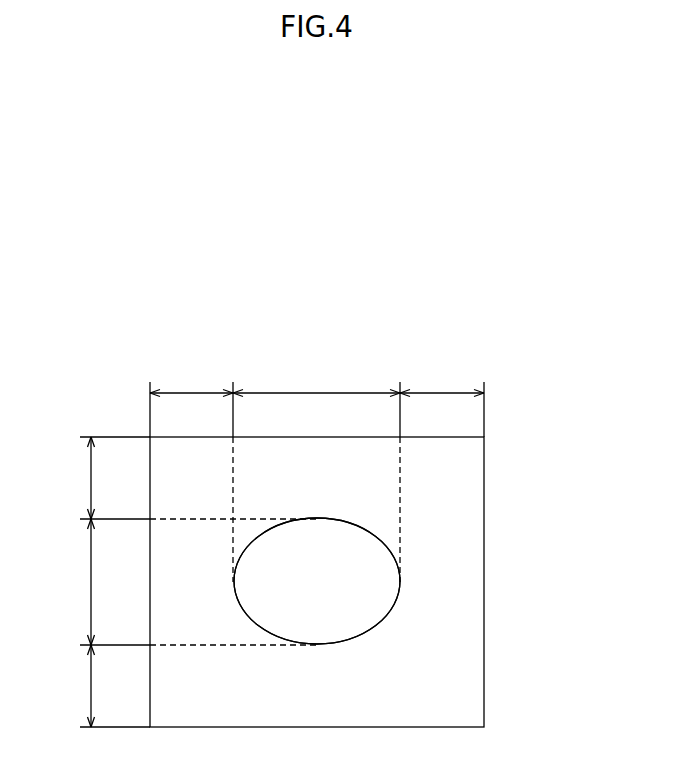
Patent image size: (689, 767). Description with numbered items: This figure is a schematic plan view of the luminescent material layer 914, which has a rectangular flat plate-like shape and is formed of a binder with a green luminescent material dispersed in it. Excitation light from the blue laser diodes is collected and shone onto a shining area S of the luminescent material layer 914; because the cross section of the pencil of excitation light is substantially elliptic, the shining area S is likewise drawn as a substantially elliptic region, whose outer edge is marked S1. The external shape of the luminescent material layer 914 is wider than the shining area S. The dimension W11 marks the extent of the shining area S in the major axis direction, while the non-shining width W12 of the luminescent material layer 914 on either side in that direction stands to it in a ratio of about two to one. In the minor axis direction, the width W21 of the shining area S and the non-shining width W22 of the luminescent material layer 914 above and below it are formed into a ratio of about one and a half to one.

The luminescent material layer 914 is at (484, 502).
The shining area S is at (365, 594).
The edge of light spot S1 is at (400, 582).
The central width W11 is at (316, 377).
The non-shining width in the major axis direction W12 is at (317, 377).
The width in the minor axis direction of the shining area W21 is at (61, 582).
The non-shining width in the minor axis direction W22 is at (61, 582).